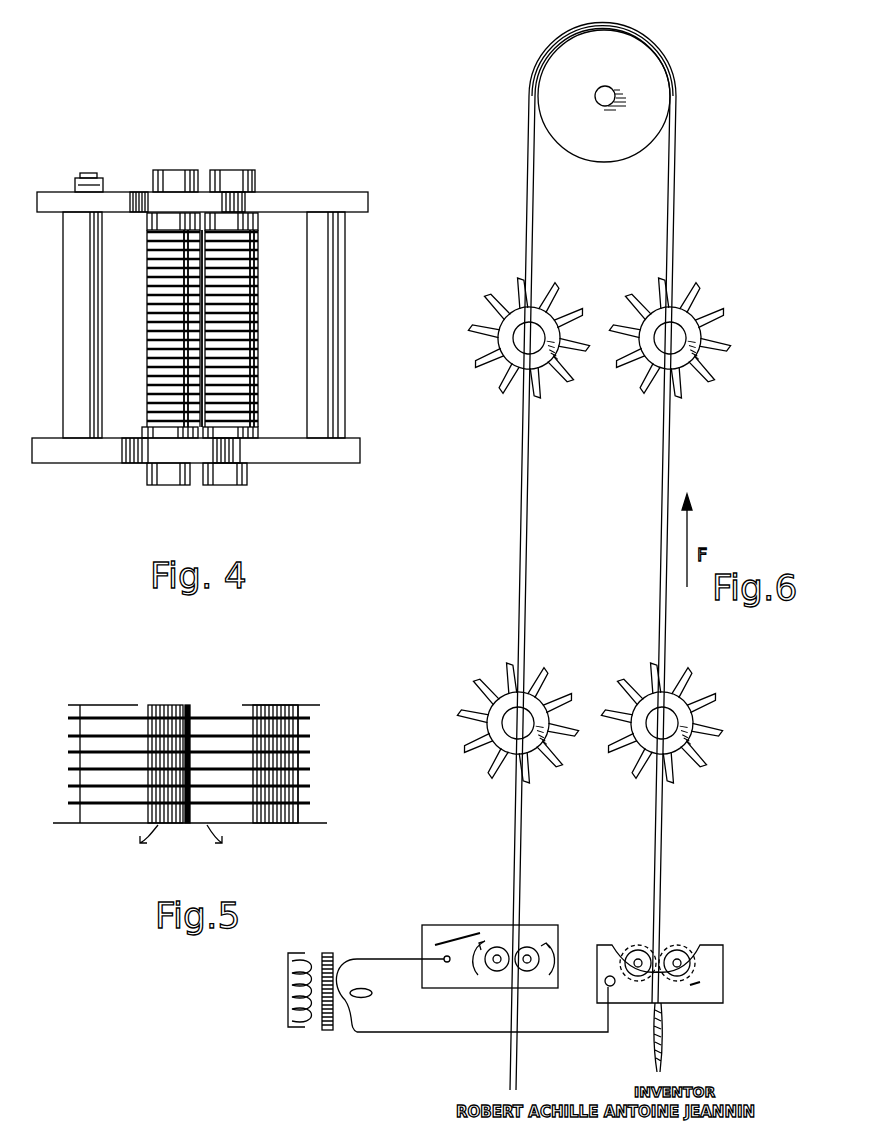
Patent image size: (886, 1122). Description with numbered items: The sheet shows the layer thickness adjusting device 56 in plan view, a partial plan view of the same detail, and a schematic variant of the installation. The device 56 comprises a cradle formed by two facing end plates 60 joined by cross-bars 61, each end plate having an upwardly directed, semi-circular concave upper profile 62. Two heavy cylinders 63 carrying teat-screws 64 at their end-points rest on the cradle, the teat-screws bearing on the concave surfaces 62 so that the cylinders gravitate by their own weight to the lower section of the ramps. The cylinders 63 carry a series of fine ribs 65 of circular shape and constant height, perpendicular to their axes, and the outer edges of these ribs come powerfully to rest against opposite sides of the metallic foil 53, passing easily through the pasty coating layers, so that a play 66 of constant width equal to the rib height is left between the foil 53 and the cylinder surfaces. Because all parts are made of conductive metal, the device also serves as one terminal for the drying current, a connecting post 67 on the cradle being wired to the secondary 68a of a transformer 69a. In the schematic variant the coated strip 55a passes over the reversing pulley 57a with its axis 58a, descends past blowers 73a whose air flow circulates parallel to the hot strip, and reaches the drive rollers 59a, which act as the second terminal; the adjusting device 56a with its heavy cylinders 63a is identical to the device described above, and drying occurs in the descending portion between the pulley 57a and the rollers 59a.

In FIG. 4, the layer thickness adjusting device 56 is at (128, 186).
In FIG. 4, the connecting post 67 is at (100, 178).
In FIG. 4, the semi-circular concave upper profile 62 is at (138, 192).
In FIG. 4, the teat-screws 64 is at (228, 208).
In FIG. 4, the end plates 60 is at (322, 210).
In FIG. 4, the cross-bars 61 is at (68, 283).
In FIG. 4, the heavy cylinders 63 is at (158, 282).
In FIG. 4, the fine ribs 65 is at (148, 345).
In FIG. 5, the fine ribs 65 is at (70, 760).
In FIG. 5, the foil 53 is at (192, 730).
In FIG. 5, the play 66 is at (192, 826).
In FIG. 6, the reversing pulley 57a is at (640, 65).
In FIG. 6, the axis of the pulley 58a is at (594, 96).
In FIG. 6, the blowers 73a is at (622, 297).
In FIG. 6, the strip 55a is at (664, 848).
In FIG. 6, the strip drive rollers 59a is at (527, 947).
In FIG. 6, the heavy cylinders 63a is at (676, 946).
In FIG. 6, the layer thickness adjusting device 56a is at (713, 939).
In FIG. 6, the transformer 69a is at (328, 953).
In FIG. 6, the secondary of the transformer 68a is at (360, 997).